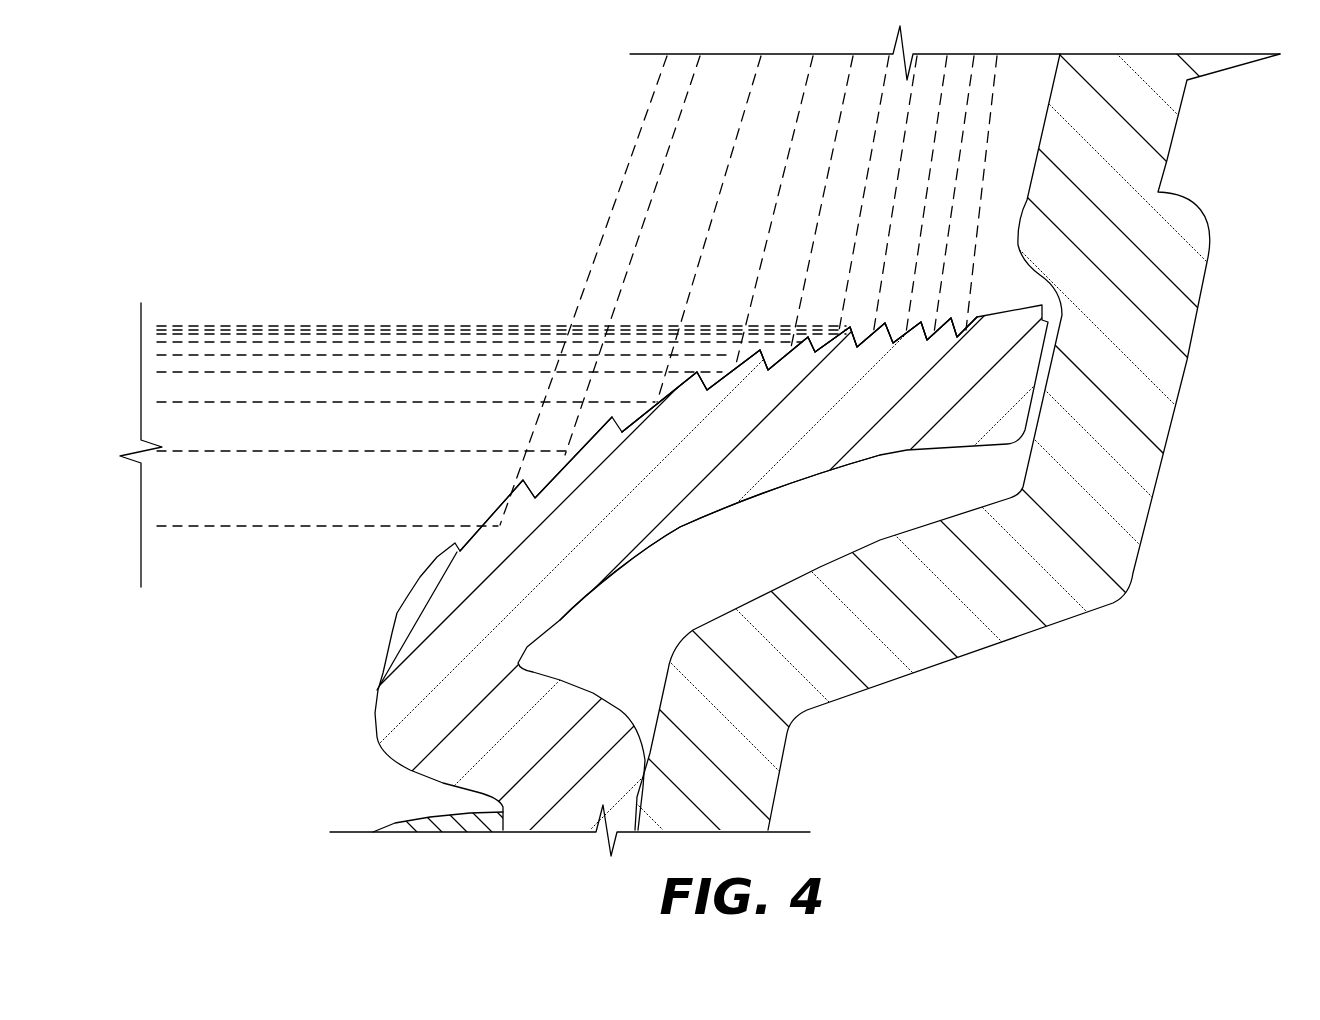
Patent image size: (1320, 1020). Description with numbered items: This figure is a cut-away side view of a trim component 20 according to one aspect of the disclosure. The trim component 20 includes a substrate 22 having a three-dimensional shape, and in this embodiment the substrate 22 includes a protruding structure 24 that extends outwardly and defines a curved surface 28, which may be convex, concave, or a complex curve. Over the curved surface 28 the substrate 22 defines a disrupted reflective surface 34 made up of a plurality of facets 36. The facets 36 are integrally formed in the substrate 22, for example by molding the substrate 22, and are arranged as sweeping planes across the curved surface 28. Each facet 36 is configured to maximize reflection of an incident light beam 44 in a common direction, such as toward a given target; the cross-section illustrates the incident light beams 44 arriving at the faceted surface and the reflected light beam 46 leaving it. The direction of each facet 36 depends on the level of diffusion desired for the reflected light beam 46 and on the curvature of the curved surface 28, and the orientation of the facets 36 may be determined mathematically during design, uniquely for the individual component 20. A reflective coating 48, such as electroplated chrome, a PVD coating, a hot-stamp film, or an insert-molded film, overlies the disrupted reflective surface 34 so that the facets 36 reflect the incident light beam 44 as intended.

The trim component 20 is at (276, 111).
The substrate 22 is at (1150, 287).
The protruding structure 24 is at (378, 612).
The curved surface 28 is at (693, 450).
The disrupted reflective surface 34 is at (653, 397).
The facets 36 is at (729, 327).
The incident light beam 44 is at (693, 145).
The reflected light beam 46 is at (313, 420).
The reflective coating 48 is at (518, 508).